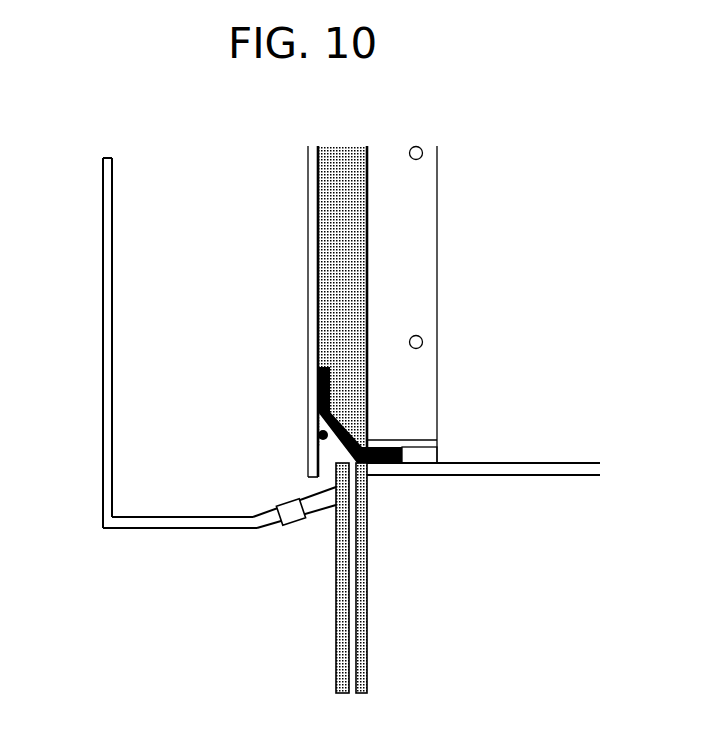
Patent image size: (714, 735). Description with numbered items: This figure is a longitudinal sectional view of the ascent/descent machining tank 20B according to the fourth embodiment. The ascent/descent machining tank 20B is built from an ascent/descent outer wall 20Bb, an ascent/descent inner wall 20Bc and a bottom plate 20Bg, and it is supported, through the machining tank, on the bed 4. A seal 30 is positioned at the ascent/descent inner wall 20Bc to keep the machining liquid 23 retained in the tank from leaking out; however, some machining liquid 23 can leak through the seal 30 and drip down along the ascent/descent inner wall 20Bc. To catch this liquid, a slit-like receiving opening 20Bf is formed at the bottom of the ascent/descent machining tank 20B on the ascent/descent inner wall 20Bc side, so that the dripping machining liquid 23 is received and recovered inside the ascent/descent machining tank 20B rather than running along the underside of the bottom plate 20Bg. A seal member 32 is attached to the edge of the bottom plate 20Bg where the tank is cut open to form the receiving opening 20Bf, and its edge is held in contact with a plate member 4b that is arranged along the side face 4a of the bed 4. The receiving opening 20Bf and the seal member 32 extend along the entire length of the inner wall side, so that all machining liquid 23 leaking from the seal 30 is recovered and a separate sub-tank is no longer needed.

The ascent/descent machining tank 20B is at (251, 343).
The ascent/descent outer wall 20Bb is at (113, 208).
The ascent/descent inner wall 20Bc is at (309, 195).
The bottom plate 20Bg is at (173, 528).
The receiving opening 20Bf is at (308, 487).
The seal 30 is at (343, 416).
The machining liquid 23 is at (323, 445).
The seal member 32 is at (297, 527).
The bed 4 is at (431, 578).
The side face 4a is at (367, 644).
The plate member 4b is at (336, 634).